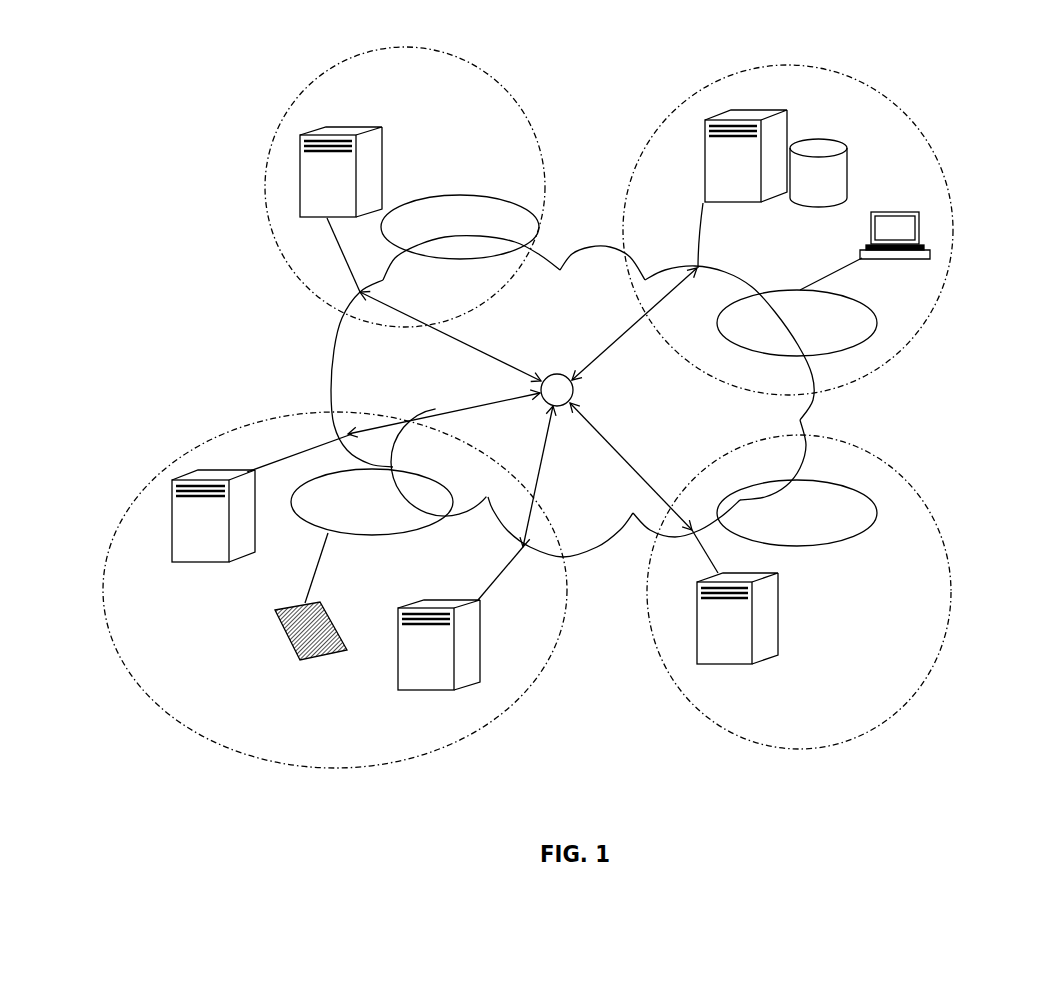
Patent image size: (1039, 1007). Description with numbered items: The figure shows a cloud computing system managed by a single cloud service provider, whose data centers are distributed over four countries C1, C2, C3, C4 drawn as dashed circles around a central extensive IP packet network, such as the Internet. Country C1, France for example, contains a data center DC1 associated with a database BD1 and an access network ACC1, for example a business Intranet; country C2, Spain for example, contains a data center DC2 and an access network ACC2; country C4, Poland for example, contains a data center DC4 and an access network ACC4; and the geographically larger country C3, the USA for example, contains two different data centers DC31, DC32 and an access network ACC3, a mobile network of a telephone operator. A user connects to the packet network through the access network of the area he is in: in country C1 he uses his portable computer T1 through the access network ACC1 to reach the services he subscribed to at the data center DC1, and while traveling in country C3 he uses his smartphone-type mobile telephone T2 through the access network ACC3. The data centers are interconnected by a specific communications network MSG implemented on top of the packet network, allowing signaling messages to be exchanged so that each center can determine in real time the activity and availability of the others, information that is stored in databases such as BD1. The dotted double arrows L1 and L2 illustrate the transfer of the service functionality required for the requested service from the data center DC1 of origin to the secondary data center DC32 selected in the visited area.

The country C1 is at (893, 103).
The country C2 is at (499, 100).
The country C3 is at (540, 678).
The country C4 is at (952, 613).
The data center DC1 is at (750, 175).
The data center DC2 is at (348, 188).
The data center DC31 is at (448, 661).
The data center DC32 is at (223, 531).
The data center DC4 is at (743, 635).
The database BD1 is at (837, 191).
The portable computer T1 is at (865, 251).
The mobile telephone T2 is at (311, 613).
The access network ACC1 is at (797, 323).
The access network ACC2 is at (460, 227).
The access network ACC3 is at (372, 502).
The access network ACC4 is at (797, 513).
The communications network MSG is at (576, 391).
The double arrow L1 is at (627, 333).
The double arrow L2 is at (473, 401).